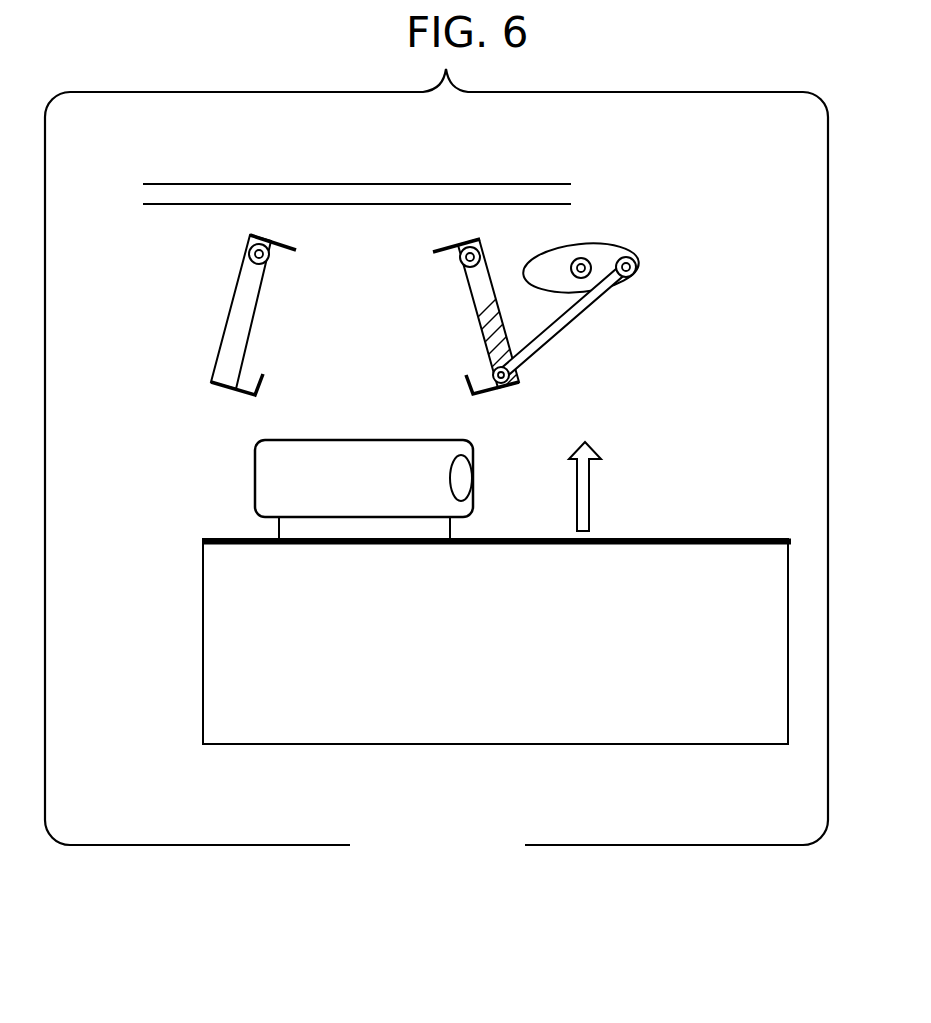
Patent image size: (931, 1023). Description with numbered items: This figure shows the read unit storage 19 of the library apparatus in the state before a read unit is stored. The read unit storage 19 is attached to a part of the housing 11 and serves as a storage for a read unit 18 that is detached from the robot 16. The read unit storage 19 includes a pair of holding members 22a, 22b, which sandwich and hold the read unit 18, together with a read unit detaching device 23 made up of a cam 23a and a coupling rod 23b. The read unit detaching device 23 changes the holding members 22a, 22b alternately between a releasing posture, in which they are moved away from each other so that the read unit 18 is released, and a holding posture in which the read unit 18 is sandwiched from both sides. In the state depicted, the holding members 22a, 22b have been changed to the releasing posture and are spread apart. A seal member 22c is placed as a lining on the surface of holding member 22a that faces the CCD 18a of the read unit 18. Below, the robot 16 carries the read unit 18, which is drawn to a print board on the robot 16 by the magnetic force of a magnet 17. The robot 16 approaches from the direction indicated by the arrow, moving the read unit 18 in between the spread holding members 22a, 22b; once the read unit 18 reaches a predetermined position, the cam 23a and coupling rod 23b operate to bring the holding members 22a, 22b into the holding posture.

The housing 11 is at (187, 202).
The robot 16 is at (200, 618).
The magnet 17 is at (276, 526).
The read unit 18 is at (365, 468).
The CCD 18a is at (470, 451).
The read unit storage 19 is at (578, 357).
The holding member 22a is at (490, 267).
The holding member 22b is at (213, 333).
The seal member 22c is at (487, 348).
The read unit detaching device 23 is at (643, 298).
The cam 23a is at (628, 246).
The coupling rod 23b is at (593, 317).